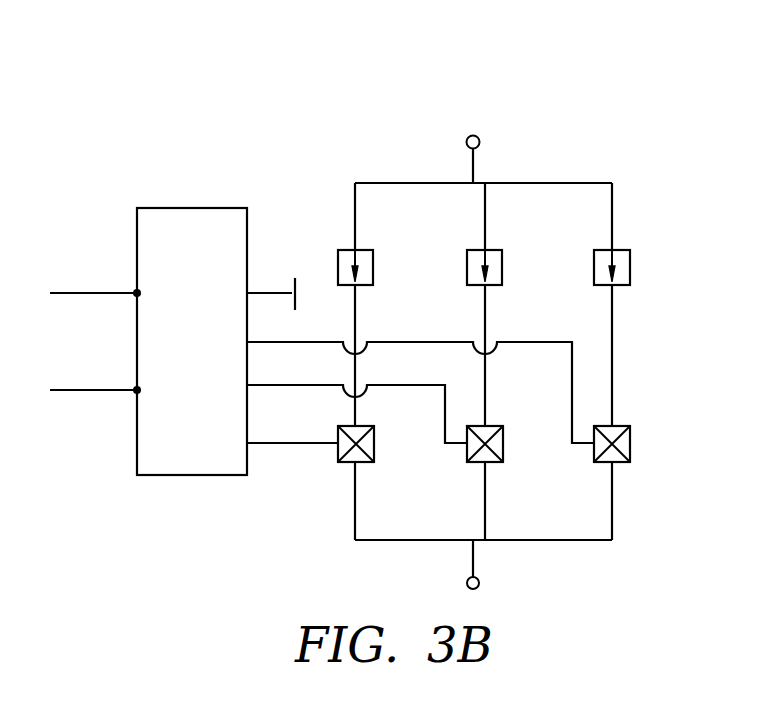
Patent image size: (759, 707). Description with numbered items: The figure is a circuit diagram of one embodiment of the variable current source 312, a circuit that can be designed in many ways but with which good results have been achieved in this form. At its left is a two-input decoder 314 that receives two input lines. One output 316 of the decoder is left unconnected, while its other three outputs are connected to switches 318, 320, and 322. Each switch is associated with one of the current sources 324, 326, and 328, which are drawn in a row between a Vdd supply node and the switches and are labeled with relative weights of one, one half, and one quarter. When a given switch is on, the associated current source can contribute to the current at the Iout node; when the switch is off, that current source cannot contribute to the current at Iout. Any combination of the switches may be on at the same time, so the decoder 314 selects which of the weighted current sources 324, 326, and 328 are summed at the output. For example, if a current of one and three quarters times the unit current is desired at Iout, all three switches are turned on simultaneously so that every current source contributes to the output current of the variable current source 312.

The variable current source 312 is at (640, 109).
The two-input decoder 314 is at (212, 430).
The output 316 is at (258, 292).
The switch 318 is at (363, 462).
The switch 320 is at (492, 462).
The switch 322 is at (620, 462).
The current source 324 is at (365, 247).
The current source 326 is at (490, 247).
The current source 328 is at (618, 248).